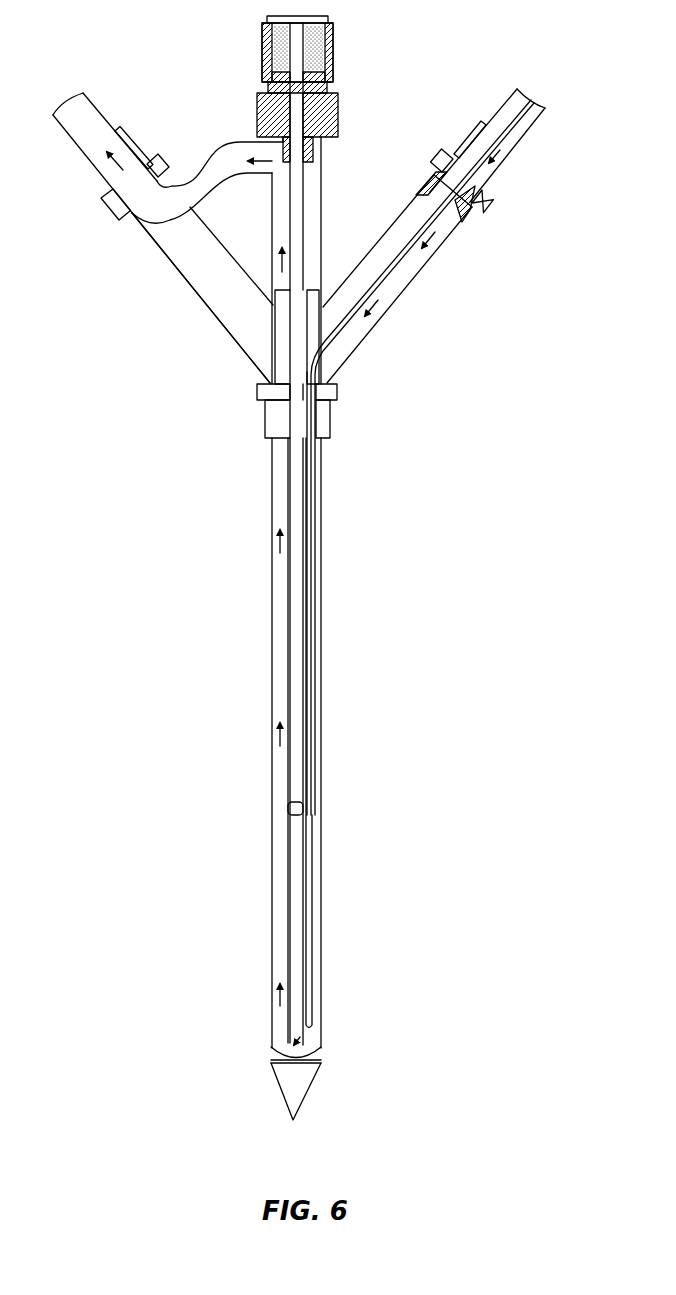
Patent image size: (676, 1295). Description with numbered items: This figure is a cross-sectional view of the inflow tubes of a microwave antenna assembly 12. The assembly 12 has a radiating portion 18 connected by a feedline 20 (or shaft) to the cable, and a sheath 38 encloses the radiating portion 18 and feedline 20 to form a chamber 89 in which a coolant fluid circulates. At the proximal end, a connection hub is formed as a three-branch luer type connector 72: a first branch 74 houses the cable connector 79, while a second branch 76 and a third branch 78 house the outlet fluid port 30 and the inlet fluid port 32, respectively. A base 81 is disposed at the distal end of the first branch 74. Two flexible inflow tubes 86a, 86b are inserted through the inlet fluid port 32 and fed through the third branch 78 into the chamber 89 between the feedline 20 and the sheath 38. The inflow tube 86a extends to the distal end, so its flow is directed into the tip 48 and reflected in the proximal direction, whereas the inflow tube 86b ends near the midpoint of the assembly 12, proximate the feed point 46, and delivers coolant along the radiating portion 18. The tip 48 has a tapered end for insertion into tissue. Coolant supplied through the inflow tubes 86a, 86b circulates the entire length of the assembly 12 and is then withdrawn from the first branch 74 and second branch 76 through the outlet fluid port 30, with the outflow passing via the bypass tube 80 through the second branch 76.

The antenna assembly 12 is at (146, 552).
The radiating portion 18 is at (277, 791).
The feedline 20 is at (270, 651).
The outlet fluid port 30 is at (105, 206).
The inlet fluid port 32 is at (497, 208).
The sheath 38 is at (271, 963).
The feed point 46 is at (285, 808).
The tip 48 is at (280, 1085).
The three-branch luer type connector 72 is at (360, 151).
The first branch 74 is at (326, 208).
The second branch 76 is at (203, 306).
The third branch 78 is at (412, 285).
The cable connector 79 is at (340, 116).
The bypass tube 80 is at (262, 180).
The base 81 is at (330, 425).
The inflow tube 86a is at (313, 676).
The inflow tube 86b is at (316, 626).
The chamber 89 is at (282, 893).